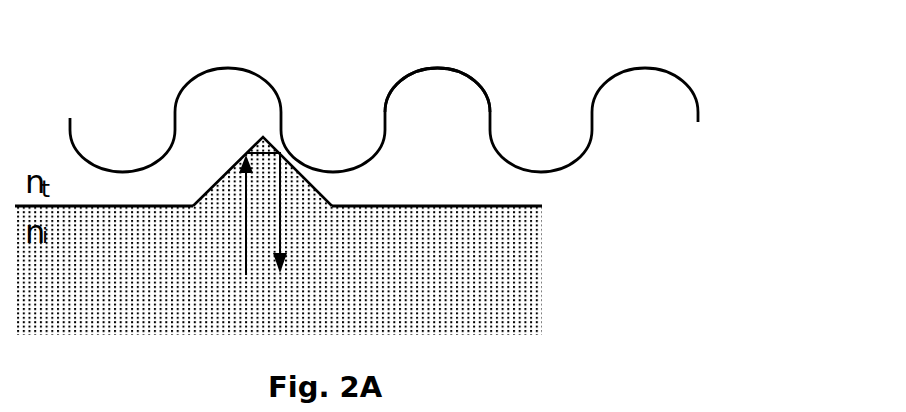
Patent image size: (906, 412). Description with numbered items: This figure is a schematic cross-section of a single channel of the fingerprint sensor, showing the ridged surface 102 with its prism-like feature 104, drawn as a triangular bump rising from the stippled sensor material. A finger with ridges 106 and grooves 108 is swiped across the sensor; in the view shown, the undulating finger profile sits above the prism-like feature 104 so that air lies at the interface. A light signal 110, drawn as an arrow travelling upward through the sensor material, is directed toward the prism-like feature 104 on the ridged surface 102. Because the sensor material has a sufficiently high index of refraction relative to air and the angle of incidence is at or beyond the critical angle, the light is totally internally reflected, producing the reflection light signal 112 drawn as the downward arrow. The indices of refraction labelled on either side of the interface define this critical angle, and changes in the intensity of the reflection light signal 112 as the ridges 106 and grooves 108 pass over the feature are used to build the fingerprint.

The ridged surface 102 is at (483, 208).
The prism-like feature 104 is at (246, 157).
The ridges 106 is at (590, 147).
The grooves 108 is at (463, 73).
The light signal 110 is at (243, 232).
The reflection light signal 112 is at (282, 217).